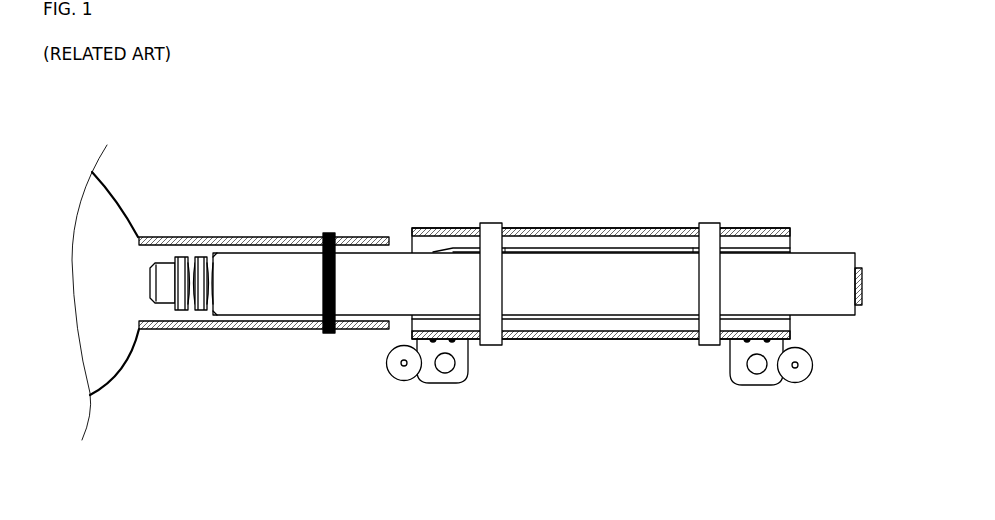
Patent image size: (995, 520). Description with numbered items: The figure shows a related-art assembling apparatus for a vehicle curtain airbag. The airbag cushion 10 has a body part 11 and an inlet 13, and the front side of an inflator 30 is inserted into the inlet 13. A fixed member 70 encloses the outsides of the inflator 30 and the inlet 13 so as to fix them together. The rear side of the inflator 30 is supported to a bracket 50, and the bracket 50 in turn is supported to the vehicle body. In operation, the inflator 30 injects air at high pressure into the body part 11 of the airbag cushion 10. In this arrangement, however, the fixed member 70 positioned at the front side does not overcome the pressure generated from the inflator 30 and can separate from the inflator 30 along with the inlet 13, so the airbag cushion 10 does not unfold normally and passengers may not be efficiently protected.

The airbag cushion 10 is at (467, 274).
The body part 11 is at (113, 219).
The inlet 13 is at (166, 330).
The inflator 30 is at (249, 305).
The bracket 50 is at (755, 228).
The fixed member 70 is at (328, 233).